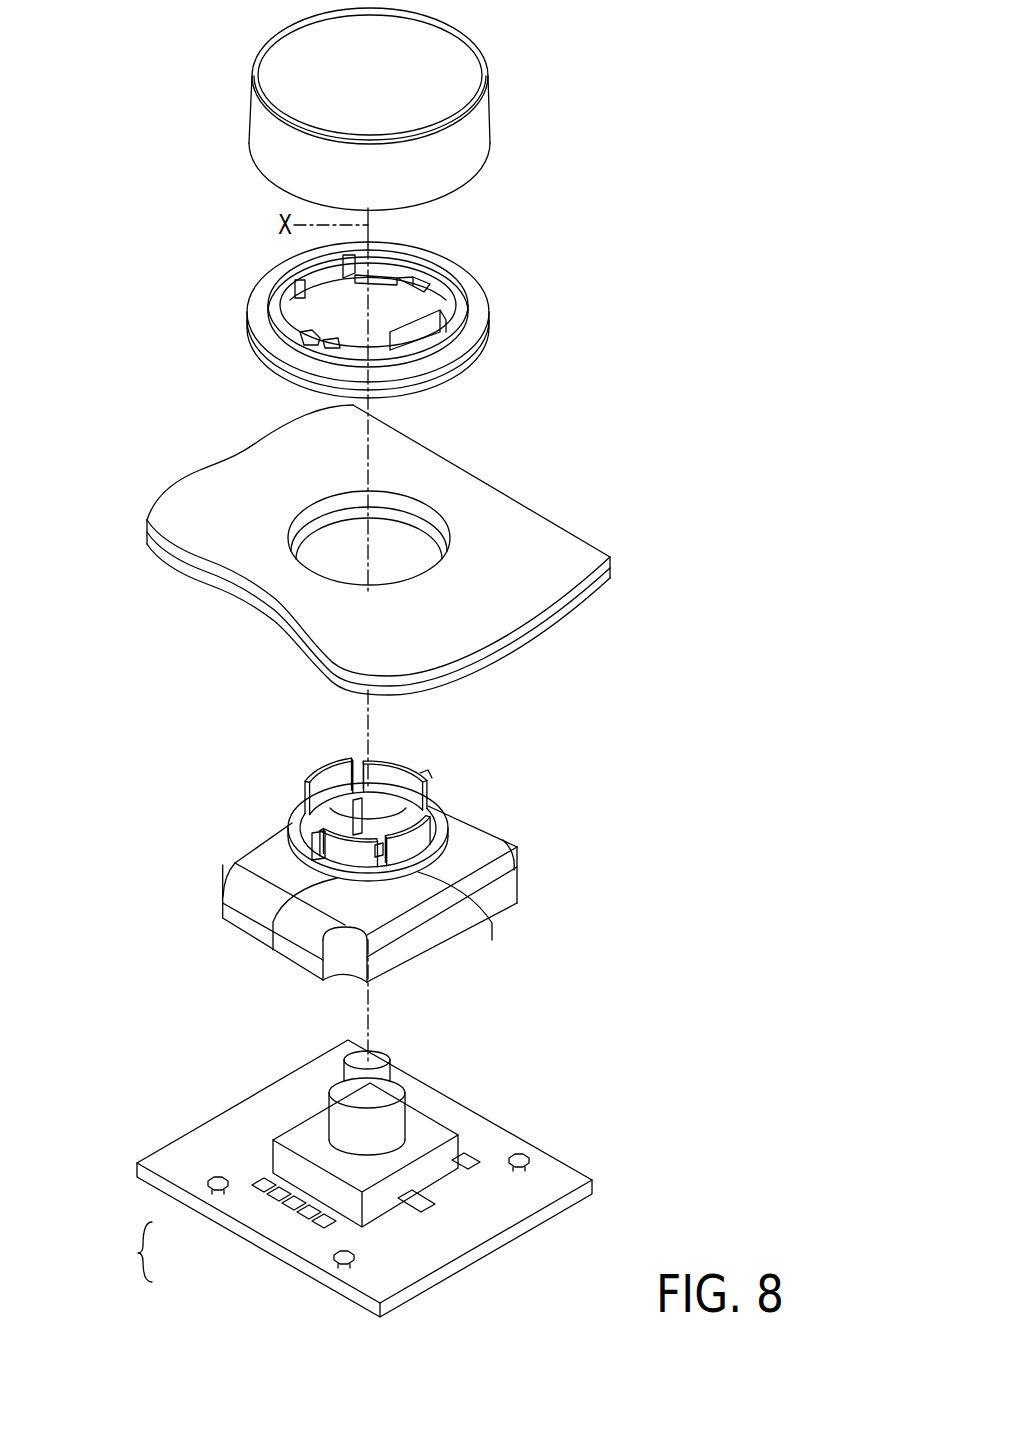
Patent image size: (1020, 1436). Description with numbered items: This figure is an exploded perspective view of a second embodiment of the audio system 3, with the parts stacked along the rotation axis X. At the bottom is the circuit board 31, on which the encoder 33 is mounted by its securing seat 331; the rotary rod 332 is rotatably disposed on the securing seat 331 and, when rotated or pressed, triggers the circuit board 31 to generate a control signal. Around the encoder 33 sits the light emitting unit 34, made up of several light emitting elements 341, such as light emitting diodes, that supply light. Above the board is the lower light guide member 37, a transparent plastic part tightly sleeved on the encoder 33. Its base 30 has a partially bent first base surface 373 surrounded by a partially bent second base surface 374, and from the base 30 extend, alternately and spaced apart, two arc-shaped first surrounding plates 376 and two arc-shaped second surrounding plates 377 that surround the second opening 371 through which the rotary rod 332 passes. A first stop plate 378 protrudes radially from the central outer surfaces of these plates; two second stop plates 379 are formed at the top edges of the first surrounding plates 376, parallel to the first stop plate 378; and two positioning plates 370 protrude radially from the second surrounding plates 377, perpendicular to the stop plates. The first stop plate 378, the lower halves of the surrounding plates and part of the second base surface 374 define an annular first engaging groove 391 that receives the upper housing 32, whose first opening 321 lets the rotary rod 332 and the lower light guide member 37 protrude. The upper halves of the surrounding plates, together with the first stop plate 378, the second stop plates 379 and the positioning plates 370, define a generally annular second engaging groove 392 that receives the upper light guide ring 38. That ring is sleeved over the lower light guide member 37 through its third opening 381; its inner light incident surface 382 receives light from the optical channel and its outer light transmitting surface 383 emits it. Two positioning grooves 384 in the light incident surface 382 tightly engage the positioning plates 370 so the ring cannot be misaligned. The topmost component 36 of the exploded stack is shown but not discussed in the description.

The rotary knob device 3 is at (630, 183).
The base 30 is at (500, 920).
The circuit board 31 is at (592, 1193).
The upper housing 32 is at (543, 517).
The first opening 321 is at (403, 537).
The encoder 33 is at (505, 1072).
The securing seat 331 is at (440, 1155).
The rotary rod 332 is at (392, 1120).
The light emitting unit 34 is at (131, 1252).
The light emitting elements 341 is at (213, 1190).
The knob cap 36 is at (426, 65).
The lower light guide member 37 is at (497, 808).
The positioning plates 370 is at (425, 772).
The second opening 371 is at (338, 812).
The first base surface 373 is at (477, 882).
The second base surface 374 is at (463, 847).
The first surrounding plates 376 is at (310, 802).
The second surrounding plates 377 is at (393, 764).
The first stop plate 378 is at (378, 860).
The second stop plates 379 is at (332, 757).
The upper light guide ring 38 is at (502, 282).
The third opening 381 is at (390, 315).
The light incident surface 382 is at (300, 298).
The light transmitting surface 383 is at (258, 347).
The positioning grooves 384 is at (422, 284).
The first engaging groove 391 is at (370, 890).
The second engaging groove 392 is at (368, 858).